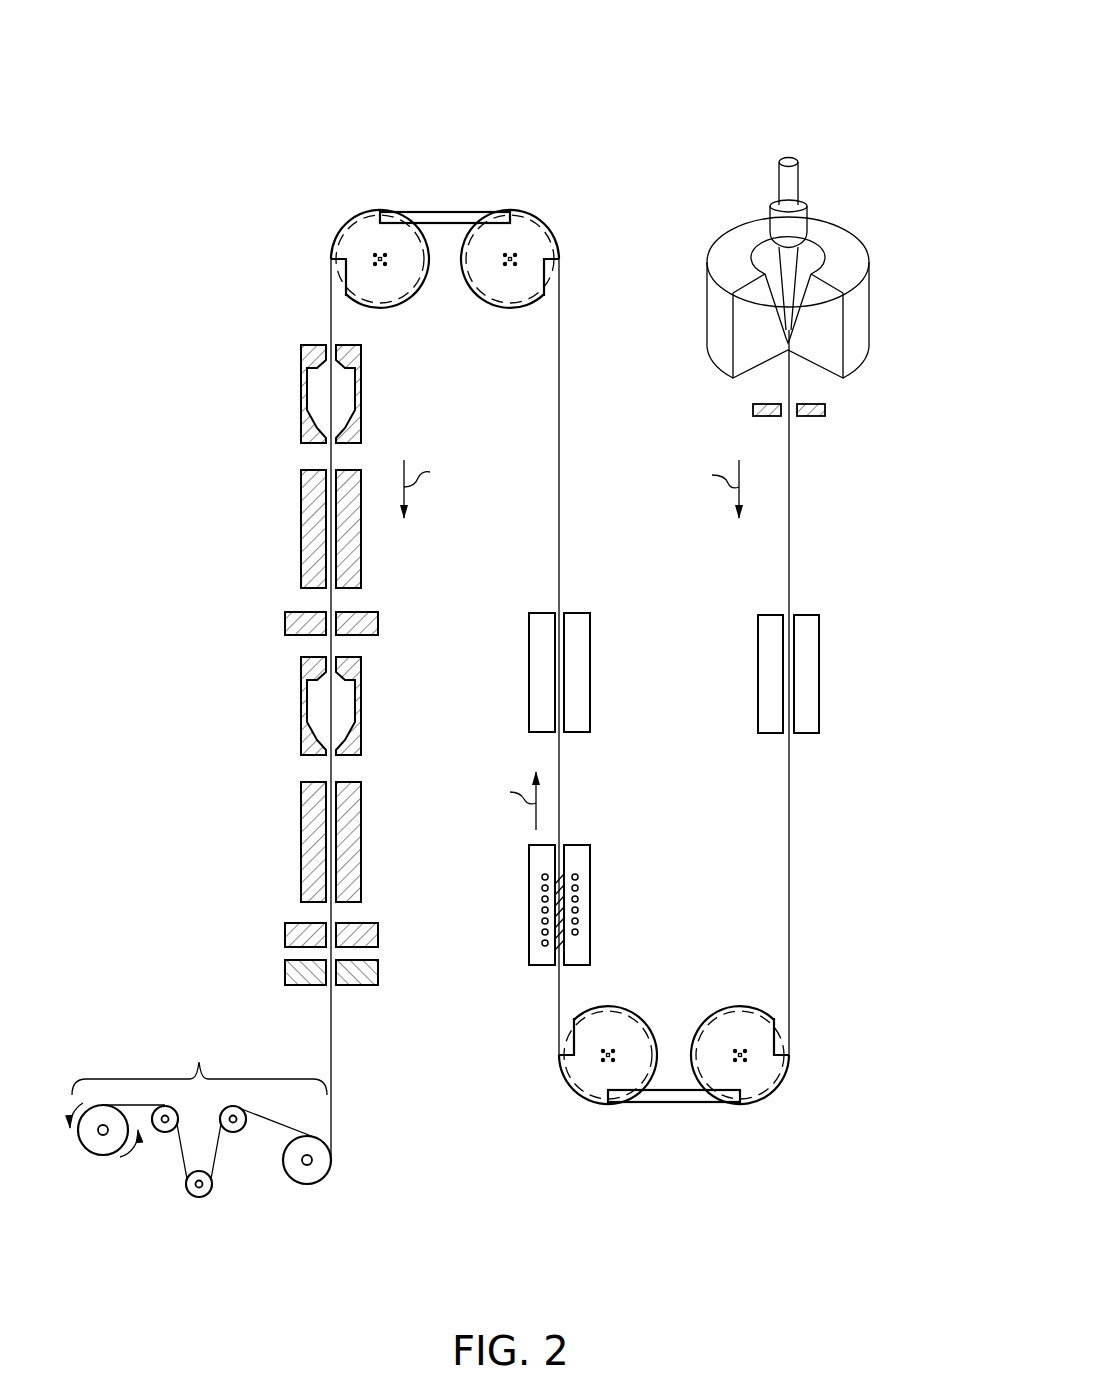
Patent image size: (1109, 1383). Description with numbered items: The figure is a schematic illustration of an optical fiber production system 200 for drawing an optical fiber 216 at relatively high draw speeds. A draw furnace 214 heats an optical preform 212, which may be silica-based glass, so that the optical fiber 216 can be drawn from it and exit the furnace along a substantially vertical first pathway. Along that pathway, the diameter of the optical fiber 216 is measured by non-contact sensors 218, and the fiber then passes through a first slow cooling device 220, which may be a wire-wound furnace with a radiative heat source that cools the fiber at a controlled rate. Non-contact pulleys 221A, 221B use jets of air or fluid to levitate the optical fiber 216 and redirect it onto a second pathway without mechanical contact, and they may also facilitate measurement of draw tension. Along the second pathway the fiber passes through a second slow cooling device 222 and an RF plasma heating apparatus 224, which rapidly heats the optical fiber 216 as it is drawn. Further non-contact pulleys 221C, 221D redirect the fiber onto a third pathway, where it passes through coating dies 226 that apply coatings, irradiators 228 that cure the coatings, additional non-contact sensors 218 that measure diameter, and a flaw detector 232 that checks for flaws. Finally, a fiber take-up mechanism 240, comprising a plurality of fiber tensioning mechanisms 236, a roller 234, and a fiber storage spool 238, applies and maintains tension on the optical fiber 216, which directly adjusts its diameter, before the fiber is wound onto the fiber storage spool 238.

The optical fiber production system 200 is at (531, 649).
The optical preform 212 is at (846, 224).
The draw furnace 214 is at (849, 297).
The optical fiber 216 is at (560, 686).
The non-contact sensors 218 is at (825, 410).
The first slow cooling device 220 is at (839, 649).
The non-contact pulley 221A is at (789, 1105).
The non-contact pulley 221B is at (567, 1105).
The non-contact pulley 221C is at (574, 233).
The non-contact pulley 221D is at (317, 237).
The second slow cooling device 222 is at (511, 647).
The RF plasma heating apparatus 224 is at (621, 908).
The coating die 226 is at (272, 563).
The irradiator 228 is at (266, 686).
The flaw detector 232 is at (285, 974).
The roller 234 is at (303, 1217).
The fiber tensioning mechanisms 236 is at (162, 1133).
The fiber storage spool 238 is at (99, 1184).
The fiber take-up mechanism 240 is at (200, 1166).